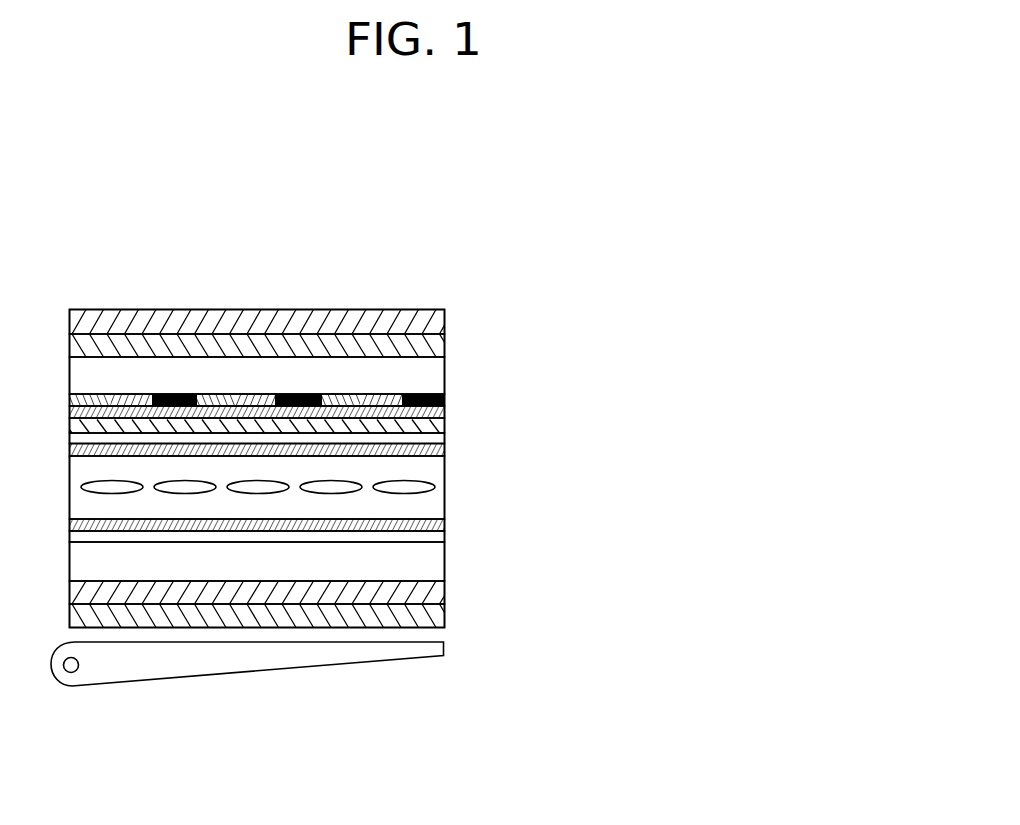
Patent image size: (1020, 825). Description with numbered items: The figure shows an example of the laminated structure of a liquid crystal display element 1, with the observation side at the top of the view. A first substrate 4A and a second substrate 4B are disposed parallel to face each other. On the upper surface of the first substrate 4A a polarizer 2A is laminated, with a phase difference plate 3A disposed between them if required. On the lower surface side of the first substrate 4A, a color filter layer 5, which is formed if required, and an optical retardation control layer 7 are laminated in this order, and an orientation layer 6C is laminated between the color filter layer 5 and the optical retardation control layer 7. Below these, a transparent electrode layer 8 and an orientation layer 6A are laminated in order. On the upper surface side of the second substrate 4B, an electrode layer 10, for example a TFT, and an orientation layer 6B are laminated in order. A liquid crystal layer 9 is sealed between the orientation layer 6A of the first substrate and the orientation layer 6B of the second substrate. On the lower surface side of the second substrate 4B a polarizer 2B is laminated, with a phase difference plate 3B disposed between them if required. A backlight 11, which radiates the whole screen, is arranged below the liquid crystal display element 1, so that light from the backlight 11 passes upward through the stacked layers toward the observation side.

The liquid crystal display element 1 is at (218, 287).
The polarizer 2A is at (445, 311).
The phase difference plate 3A is at (445, 335).
The first substrate 4A is at (436, 376).
The color filter layer 5 is at (445, 396).
The orientation layer 6C is at (445, 412).
The optical retardation control layer 7 is at (445, 426).
The transparent electrode layer 8 is at (437, 439).
The orientation layer 6A is at (445, 452).
The liquid crystal layer 9 is at (437, 490).
The orientation layer 6B is at (445, 527).
The electrode layer 10 is at (445, 543).
The second substrate 4B is at (435, 565).
The phase difference plate 3B is at (445, 592).
The polarizer 2B is at (445, 615).
The backlight 11 is at (437, 648).